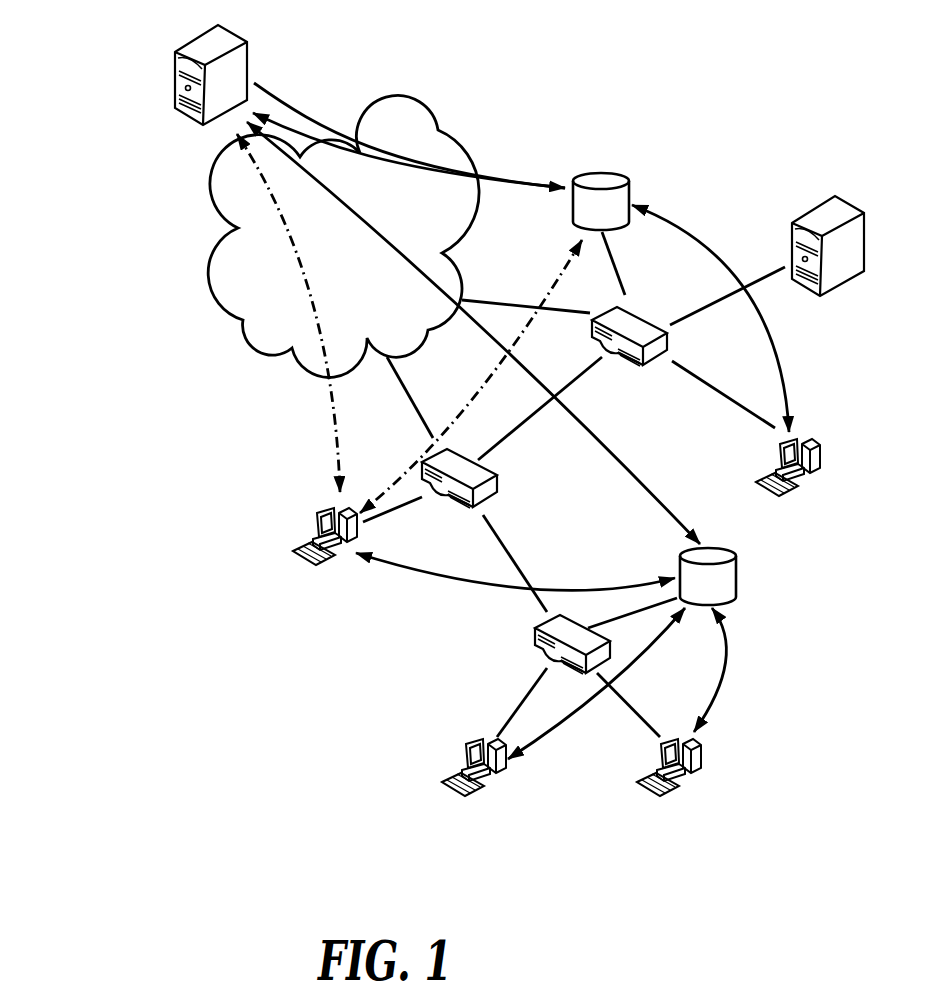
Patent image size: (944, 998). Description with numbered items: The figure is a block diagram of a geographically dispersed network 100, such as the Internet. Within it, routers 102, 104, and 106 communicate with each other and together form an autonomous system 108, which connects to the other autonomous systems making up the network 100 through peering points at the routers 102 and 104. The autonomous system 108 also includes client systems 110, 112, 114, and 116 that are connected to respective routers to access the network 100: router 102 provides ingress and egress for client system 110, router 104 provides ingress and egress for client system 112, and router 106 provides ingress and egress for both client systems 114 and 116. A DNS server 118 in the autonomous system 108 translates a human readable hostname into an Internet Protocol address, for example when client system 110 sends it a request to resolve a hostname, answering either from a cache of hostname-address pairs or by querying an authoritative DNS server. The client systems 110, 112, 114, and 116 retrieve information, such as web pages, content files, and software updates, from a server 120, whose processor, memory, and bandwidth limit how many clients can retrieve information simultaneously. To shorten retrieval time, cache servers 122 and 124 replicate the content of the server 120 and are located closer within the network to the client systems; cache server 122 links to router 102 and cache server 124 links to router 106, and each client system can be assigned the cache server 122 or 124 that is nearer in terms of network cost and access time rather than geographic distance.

The network 100 is at (184, 291).
The router 102 is at (638, 322).
The router 104 is at (468, 512).
The router 106 is at (536, 638).
The autonomous system 108 is at (677, 139).
The client system 110 is at (783, 442).
The client system 112 is at (322, 512).
The client system 114 is at (468, 741).
The client system 116 is at (660, 741).
The DNS server 118 is at (810, 230).
The server 120 is at (195, 55).
The cache server 122 is at (573, 224).
The cache server 124 is at (740, 576).